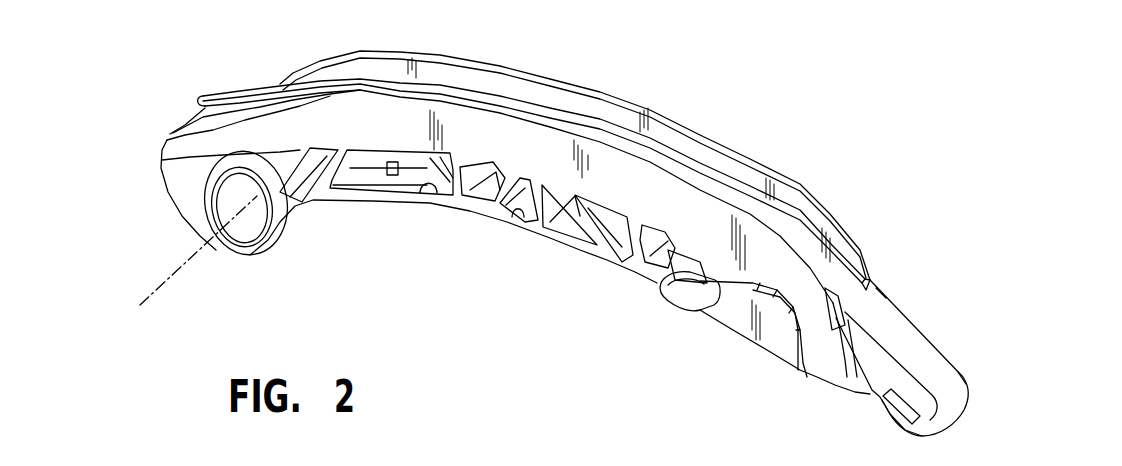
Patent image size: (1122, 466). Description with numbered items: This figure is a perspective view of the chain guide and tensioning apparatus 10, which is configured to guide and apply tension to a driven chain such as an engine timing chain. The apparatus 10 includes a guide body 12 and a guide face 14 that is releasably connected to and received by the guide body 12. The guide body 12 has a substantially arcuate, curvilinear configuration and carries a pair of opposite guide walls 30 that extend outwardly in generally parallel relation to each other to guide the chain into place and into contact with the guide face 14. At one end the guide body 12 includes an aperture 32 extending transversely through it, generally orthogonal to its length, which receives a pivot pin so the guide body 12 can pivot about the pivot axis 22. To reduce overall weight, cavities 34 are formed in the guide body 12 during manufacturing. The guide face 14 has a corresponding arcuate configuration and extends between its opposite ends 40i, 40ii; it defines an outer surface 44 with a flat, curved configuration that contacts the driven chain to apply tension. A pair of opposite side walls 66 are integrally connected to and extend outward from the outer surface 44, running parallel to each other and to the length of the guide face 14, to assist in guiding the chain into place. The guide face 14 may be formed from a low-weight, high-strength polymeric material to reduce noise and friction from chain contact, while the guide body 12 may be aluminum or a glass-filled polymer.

The apparatus 10 is at (802, 78).
The guide body 12 is at (556, 243).
The guide face 14 is at (914, 324).
The pivot axis 22 is at (170, 280).
The guide walls 30 is at (523, 66).
The aperture 32 is at (257, 240).
The cavities 34 is at (433, 192).
The first end of guide face 40i is at (164, 140).
The second end of guide face 40ii is at (966, 377).
The outer surface 44 is at (895, 312).
The side walls 66 is at (224, 93).